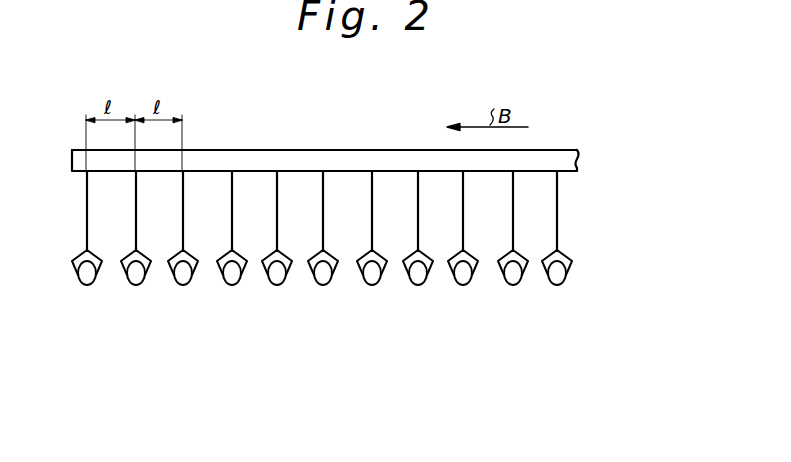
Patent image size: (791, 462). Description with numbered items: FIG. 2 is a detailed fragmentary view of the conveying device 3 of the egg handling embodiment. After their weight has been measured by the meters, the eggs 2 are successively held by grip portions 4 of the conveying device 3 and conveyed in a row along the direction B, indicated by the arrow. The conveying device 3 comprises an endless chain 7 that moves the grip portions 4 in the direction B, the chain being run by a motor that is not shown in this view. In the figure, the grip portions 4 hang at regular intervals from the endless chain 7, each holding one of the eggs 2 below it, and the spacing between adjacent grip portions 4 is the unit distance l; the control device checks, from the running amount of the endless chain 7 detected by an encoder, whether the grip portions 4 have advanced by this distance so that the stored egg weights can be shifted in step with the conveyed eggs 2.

The eggs 2 is at (93, 272).
The conveying device 3 is at (292, 150).
The grip portions 4 is at (89, 209).
The endless chain 7 is at (367, 150).